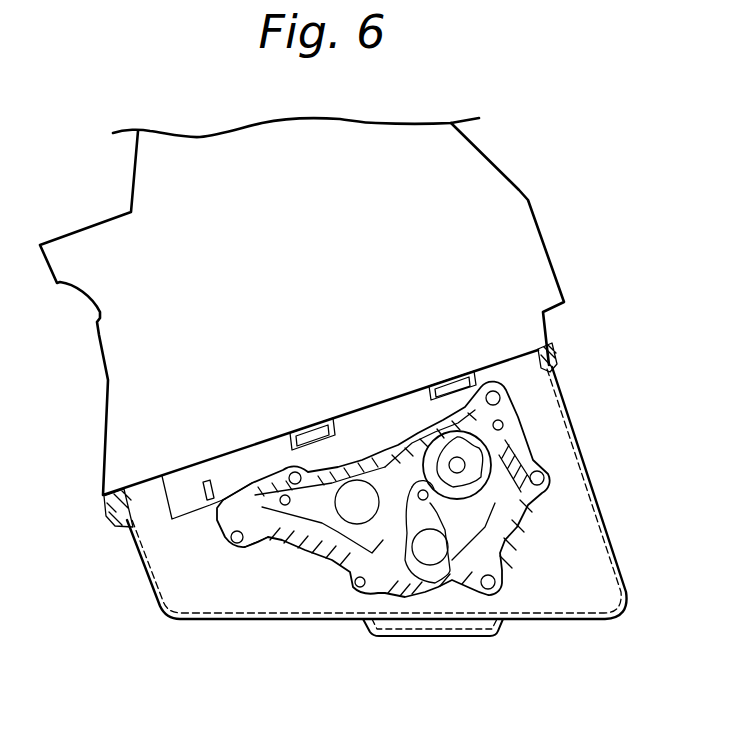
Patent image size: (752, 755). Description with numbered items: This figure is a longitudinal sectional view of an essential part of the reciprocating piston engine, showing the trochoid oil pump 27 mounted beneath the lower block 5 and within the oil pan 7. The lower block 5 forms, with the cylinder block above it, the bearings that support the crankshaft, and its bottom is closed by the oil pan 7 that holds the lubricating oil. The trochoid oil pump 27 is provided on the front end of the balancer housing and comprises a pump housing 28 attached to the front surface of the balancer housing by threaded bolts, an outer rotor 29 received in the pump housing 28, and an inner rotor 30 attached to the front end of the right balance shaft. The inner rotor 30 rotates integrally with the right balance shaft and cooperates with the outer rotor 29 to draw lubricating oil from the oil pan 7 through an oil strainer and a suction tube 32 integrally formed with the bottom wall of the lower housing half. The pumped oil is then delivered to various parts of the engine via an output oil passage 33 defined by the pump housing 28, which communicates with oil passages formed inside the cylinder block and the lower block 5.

The lower block 5 is at (526, 243).
The oil pan 7 is at (608, 520).
The trochoid oil pump 27 is at (525, 423).
The pump housing 28 is at (348, 562).
The outer rotor 29 is at (503, 523).
The inner rotor 30 is at (477, 468).
The suction tube 32 is at (428, 562).
The output oil passage 33 is at (220, 520).